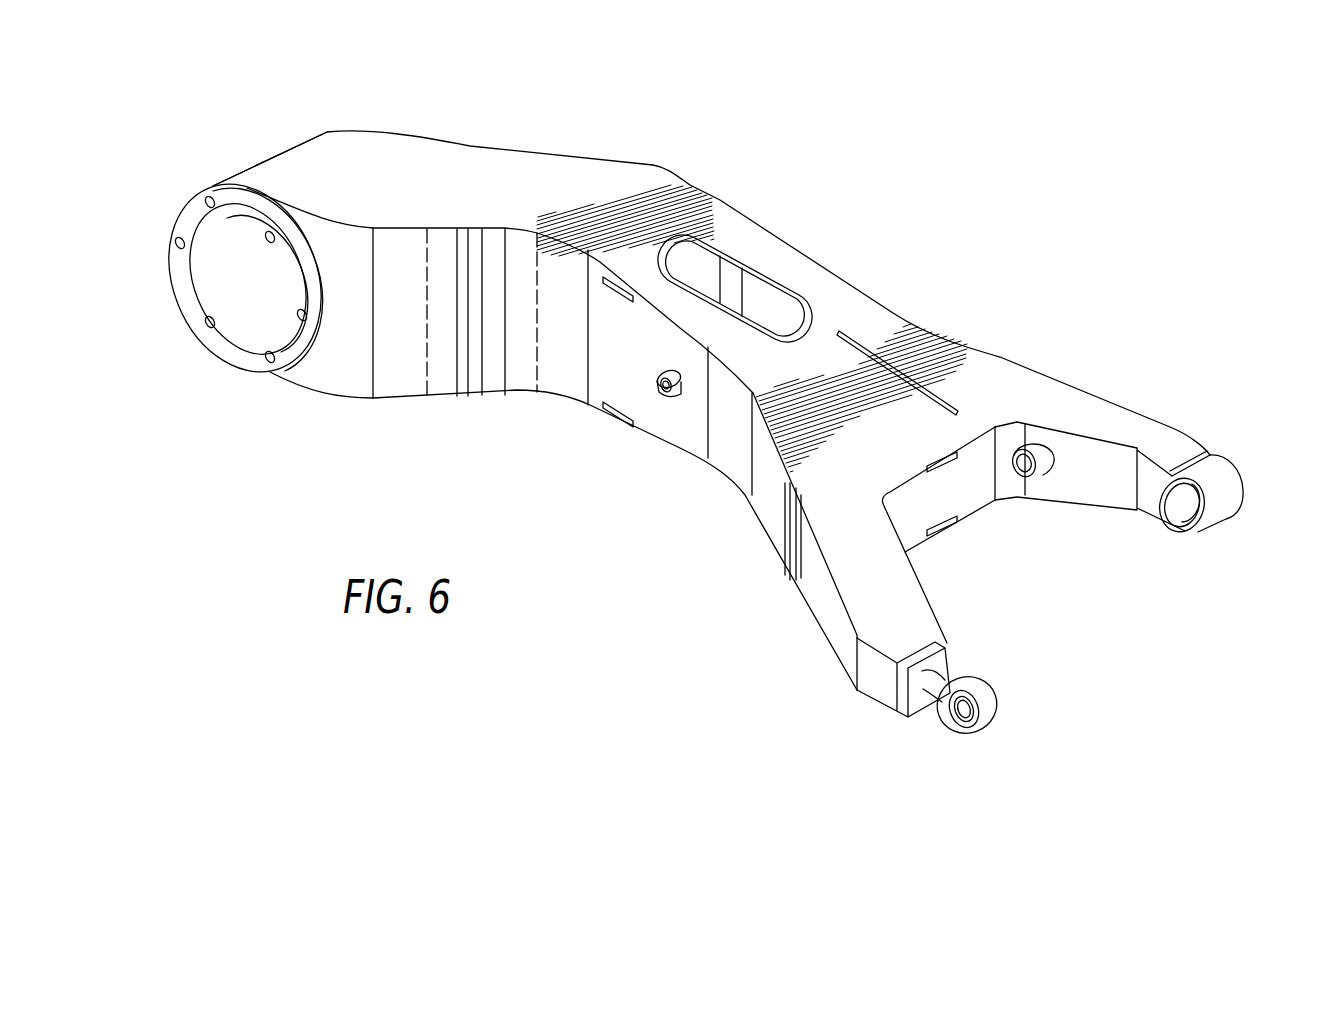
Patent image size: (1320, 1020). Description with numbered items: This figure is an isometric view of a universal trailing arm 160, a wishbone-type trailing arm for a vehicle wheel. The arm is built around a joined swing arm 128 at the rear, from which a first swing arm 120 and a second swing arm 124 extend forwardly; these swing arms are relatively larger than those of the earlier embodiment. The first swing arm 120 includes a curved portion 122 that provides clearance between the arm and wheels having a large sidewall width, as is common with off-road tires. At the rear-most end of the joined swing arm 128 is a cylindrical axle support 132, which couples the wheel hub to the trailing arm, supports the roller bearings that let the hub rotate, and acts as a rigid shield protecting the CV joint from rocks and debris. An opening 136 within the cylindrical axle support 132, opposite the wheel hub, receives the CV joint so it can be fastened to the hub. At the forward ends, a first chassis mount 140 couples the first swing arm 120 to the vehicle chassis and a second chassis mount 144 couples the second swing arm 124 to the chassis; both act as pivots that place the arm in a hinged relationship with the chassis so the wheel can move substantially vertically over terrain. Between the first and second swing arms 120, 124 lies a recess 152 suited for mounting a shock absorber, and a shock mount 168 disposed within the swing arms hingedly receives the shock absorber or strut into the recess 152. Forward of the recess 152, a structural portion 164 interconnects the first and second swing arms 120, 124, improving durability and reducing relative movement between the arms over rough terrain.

The universal trailing arm 160 is at (758, 137).
The first swing arm 120 is at (828, 611).
The curved portion 122 is at (727, 457).
The second swing arm 124 is at (1110, 420).
The joined swing arm 128 is at (462, 175).
The cylindrical axle support 132 is at (287, 153).
The opening 136 is at (238, 300).
The first chassis mount 140 is at (953, 732).
The second chassis mount 144 is at (1215, 505).
The recess 152 is at (762, 298).
The structural portion 164 is at (893, 447).
The shock mount 168 is at (648, 397).